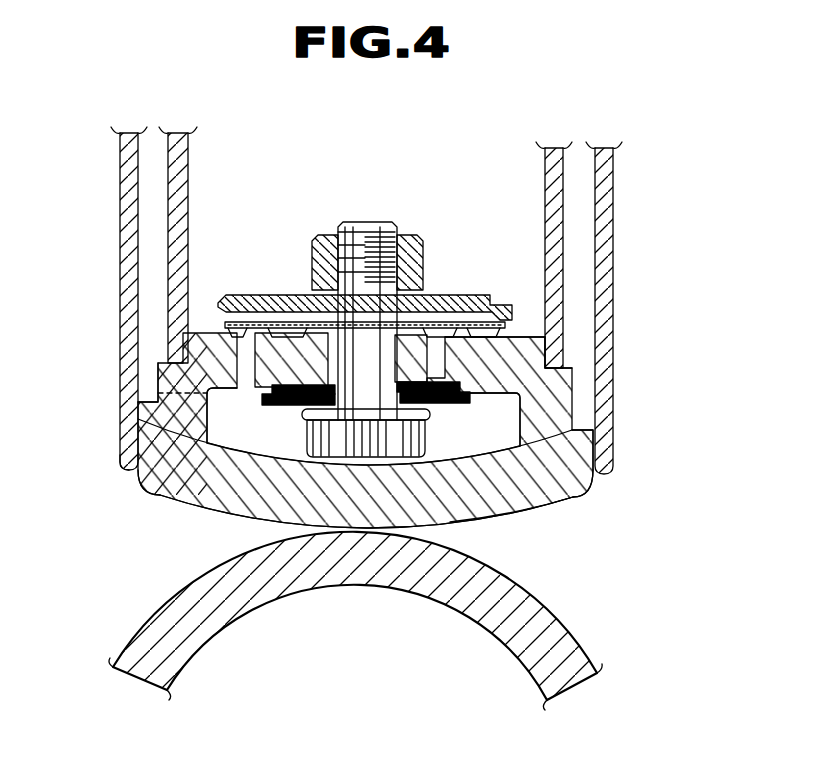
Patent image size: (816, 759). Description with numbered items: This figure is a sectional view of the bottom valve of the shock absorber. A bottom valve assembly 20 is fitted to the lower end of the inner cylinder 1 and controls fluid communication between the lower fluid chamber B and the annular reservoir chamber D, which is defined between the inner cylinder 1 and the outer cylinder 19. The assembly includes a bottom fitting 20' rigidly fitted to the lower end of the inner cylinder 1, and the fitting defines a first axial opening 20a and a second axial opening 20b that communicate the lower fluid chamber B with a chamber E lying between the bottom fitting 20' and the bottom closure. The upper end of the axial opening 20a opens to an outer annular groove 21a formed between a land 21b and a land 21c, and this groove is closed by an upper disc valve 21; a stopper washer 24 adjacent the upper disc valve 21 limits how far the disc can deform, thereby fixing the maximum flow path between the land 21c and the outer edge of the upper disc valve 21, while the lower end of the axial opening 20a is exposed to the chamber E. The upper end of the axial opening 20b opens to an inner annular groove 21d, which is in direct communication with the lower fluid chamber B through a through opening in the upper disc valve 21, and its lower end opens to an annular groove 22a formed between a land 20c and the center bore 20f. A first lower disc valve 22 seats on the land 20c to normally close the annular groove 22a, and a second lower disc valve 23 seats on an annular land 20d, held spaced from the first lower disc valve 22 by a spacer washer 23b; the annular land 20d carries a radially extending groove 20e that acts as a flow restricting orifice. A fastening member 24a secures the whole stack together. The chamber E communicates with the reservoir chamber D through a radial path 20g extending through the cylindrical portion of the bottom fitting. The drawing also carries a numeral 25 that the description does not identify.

The inner cylinder 1 is at (157, 165).
The outer cylinder 19 is at (112, 203).
The bottom valve assembly 20 is at (321, 430).
The axial opening 20a is at (238, 363).
The axial opening 20b is at (460, 362).
The land 20c is at (250, 460).
The annular land 20d is at (165, 481).
The radially extending groove 20e is at (572, 411).
The center bore 20f is at (350, 455).
The radial path 20g is at (135, 440).
The bottom fitting 20' is at (609, 317).
The upper disc valve 21 is at (243, 295).
The outer annular groove 21a is at (247, 362).
The land 21b is at (233, 333).
The land 21c is at (265, 325).
The inner annular groove 21d is at (463, 325).
The first lower disc valve 22 is at (588, 492).
The annular groove 22a is at (472, 388).
The second lower disc valve 23 is at (593, 431).
The spacer washer 23b is at (518, 505).
The stopper washer 24 is at (437, 310).
The fastening member 24a is at (470, 492).
The tube end 25 is at (140, 478).
The lower fluid chamber B is at (300, 172).
The annular reservoir chamber D is at (596, 187).
The chamber E is at (272, 445).